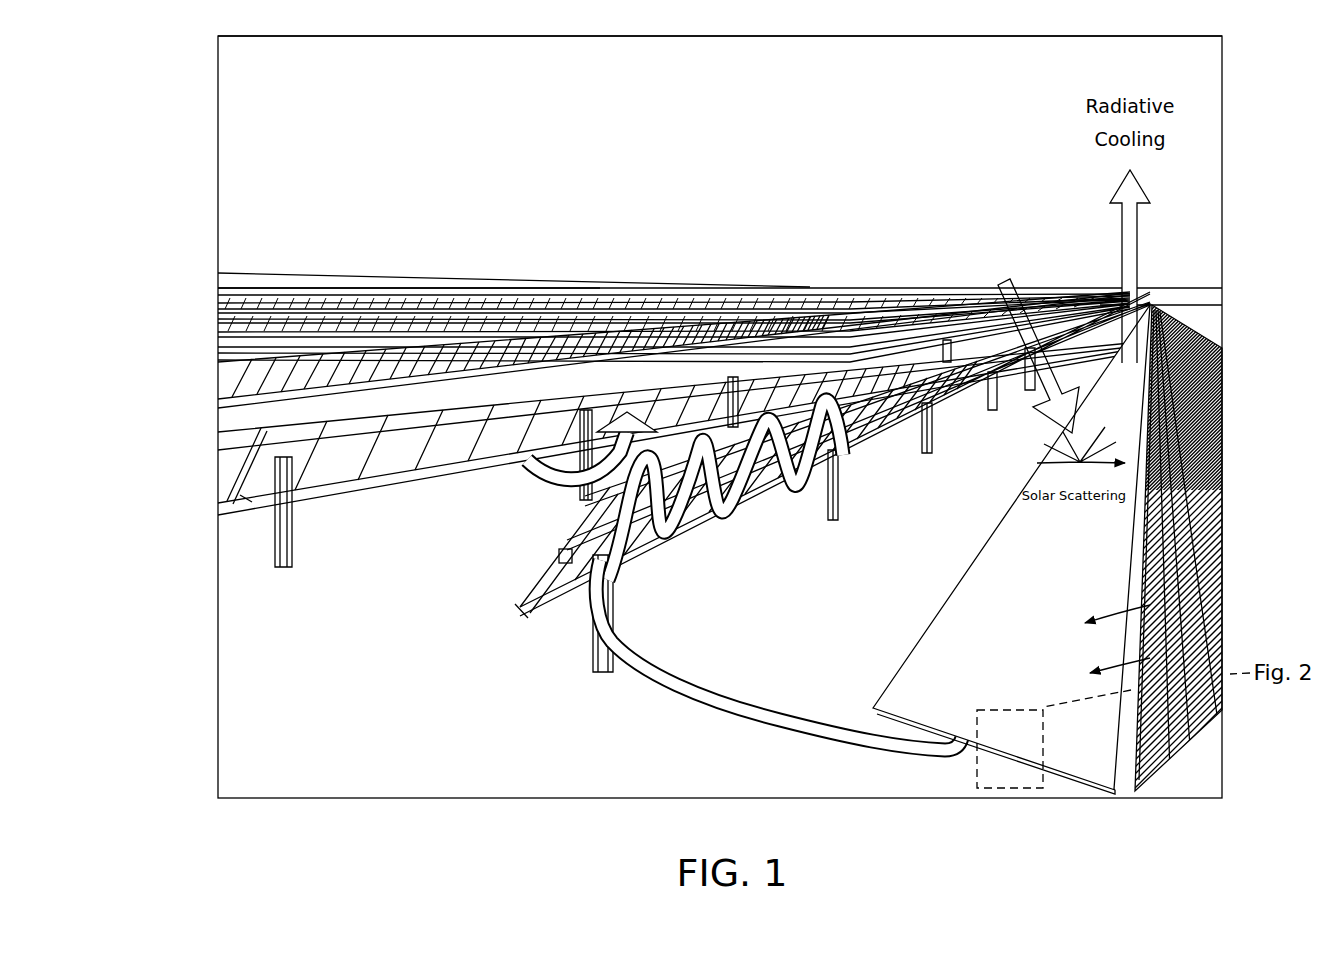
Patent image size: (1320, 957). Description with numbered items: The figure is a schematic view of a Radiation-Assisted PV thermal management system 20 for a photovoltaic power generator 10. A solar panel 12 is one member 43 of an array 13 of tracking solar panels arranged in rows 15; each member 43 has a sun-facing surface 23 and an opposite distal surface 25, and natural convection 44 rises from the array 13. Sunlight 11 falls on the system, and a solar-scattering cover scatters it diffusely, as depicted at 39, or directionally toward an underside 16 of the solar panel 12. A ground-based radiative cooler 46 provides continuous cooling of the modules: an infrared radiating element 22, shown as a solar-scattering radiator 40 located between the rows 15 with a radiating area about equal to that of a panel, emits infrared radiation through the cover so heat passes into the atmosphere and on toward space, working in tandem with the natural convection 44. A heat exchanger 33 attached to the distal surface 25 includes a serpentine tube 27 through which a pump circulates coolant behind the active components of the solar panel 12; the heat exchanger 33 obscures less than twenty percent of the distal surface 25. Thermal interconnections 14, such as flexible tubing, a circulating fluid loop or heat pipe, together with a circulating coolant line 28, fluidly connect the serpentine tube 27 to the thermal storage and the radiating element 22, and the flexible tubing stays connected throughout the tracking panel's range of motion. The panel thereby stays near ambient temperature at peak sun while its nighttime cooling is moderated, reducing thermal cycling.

The photovoltaic (PV) power generator 10 is at (140, 140).
The sunlight 11 is at (1040, 315).
The solar panel 12 is at (548, 522).
The array of tracking solar panels 13 is at (170, 288).
The thermal interconnections 14 is at (625, 665).
The rows 15 is at (290, 446).
The underside of the solar panel 16 is at (590, 600).
The thermal management system 20 is at (1200, 565).
The infrared radiating element 22 is at (1095, 549).
The sun-facing surface 23 is at (882, 300).
The distal surface 25 is at (940, 392).
The serpentine tube 27 is at (570, 420).
The circulating coolant line 28 is at (733, 382).
The heat exchanger 33 is at (697, 448).
The diffuse scattering of sunlight 39 is at (1130, 420).
The solar-scattering radiator 40 is at (1224, 547).
The member of the array 43 is at (245, 498).
The natural convection 44 is at (515, 395).
The ground-based radiative cooler 46 is at (1205, 610).